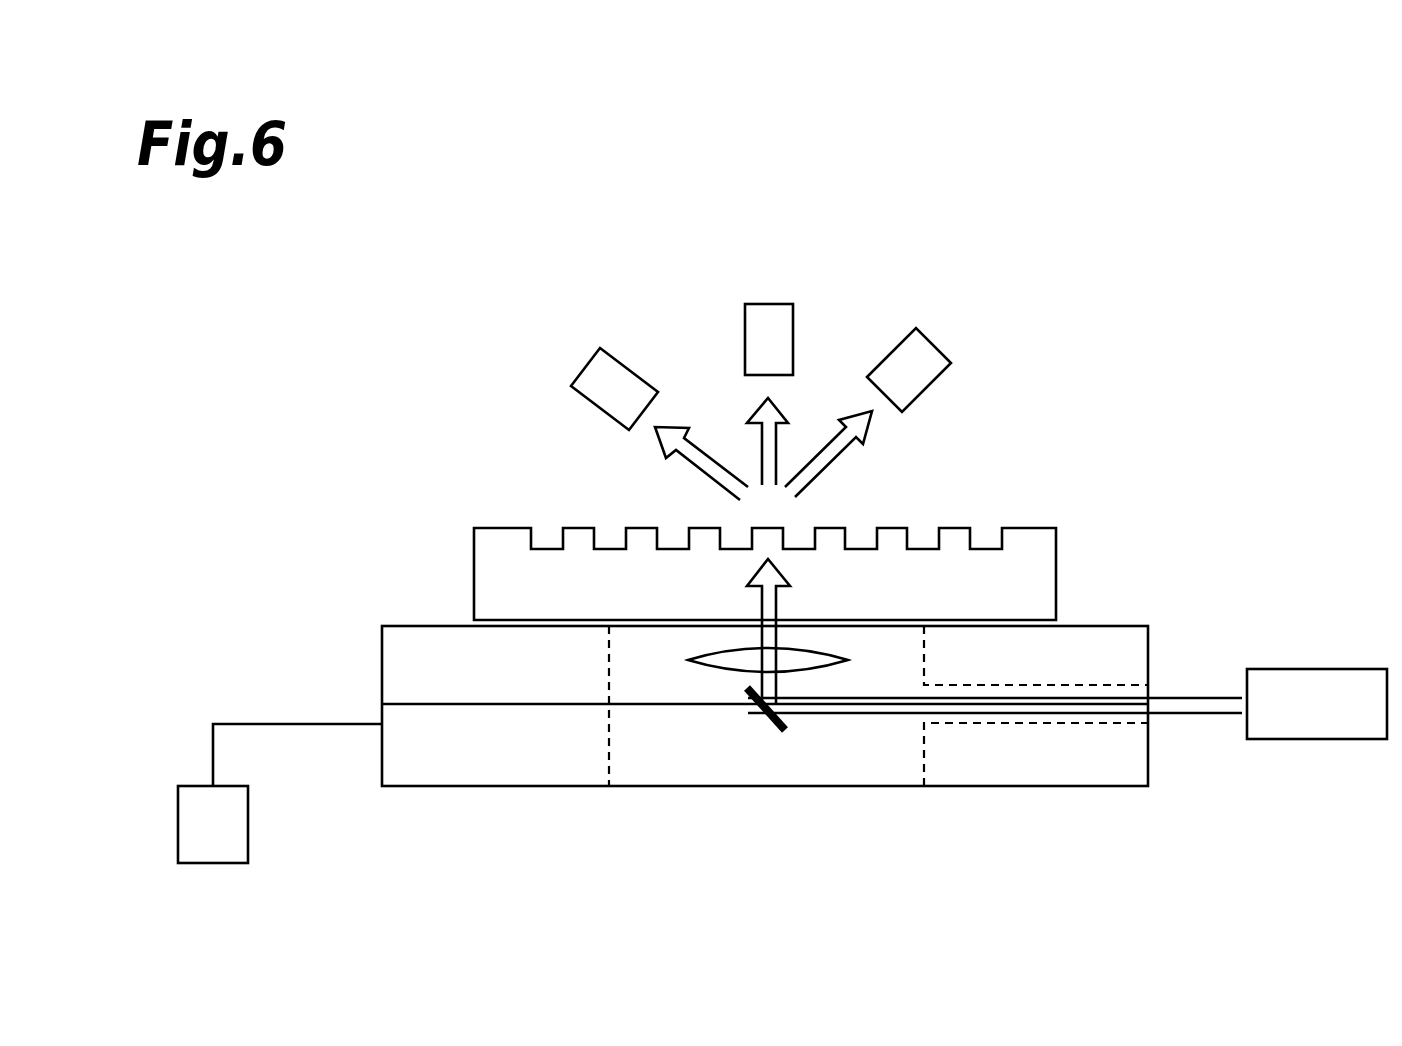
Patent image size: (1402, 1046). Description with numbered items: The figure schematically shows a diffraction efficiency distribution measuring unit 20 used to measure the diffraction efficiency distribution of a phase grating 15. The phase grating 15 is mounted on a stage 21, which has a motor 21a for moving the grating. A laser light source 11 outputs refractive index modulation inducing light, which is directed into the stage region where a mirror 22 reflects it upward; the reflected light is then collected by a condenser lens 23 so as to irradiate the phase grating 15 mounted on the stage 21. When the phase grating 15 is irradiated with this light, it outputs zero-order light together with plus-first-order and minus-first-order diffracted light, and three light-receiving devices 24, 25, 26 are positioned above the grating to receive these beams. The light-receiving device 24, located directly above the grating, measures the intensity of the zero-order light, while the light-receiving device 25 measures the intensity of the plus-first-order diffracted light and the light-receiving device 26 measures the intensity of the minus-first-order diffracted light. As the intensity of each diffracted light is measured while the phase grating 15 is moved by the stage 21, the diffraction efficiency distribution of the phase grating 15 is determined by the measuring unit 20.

The diffraction efficiency distribution measuring unit 20 is at (1147, 363).
The phase grating 15 is at (1043, 583).
The stage 21 is at (398, 743).
The motor 21a is at (187, 828).
The laser light source 11 is at (1332, 685).
The condenser lens 23 is at (723, 666).
The mirror 22 is at (772, 727).
The light-receiving device 24 is at (767, 303).
The light-receiving device 25 is at (928, 340).
The light-receiving device 26 is at (583, 365).